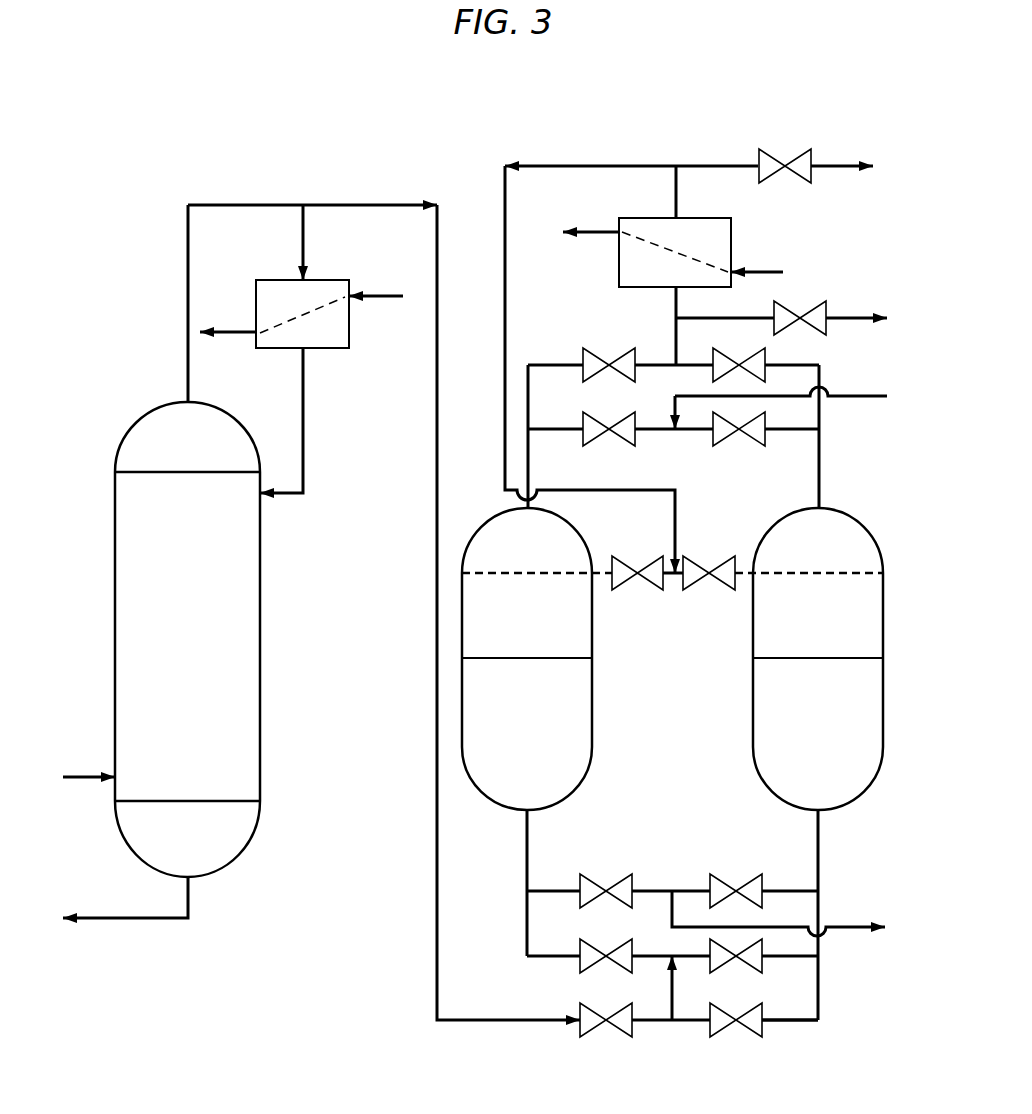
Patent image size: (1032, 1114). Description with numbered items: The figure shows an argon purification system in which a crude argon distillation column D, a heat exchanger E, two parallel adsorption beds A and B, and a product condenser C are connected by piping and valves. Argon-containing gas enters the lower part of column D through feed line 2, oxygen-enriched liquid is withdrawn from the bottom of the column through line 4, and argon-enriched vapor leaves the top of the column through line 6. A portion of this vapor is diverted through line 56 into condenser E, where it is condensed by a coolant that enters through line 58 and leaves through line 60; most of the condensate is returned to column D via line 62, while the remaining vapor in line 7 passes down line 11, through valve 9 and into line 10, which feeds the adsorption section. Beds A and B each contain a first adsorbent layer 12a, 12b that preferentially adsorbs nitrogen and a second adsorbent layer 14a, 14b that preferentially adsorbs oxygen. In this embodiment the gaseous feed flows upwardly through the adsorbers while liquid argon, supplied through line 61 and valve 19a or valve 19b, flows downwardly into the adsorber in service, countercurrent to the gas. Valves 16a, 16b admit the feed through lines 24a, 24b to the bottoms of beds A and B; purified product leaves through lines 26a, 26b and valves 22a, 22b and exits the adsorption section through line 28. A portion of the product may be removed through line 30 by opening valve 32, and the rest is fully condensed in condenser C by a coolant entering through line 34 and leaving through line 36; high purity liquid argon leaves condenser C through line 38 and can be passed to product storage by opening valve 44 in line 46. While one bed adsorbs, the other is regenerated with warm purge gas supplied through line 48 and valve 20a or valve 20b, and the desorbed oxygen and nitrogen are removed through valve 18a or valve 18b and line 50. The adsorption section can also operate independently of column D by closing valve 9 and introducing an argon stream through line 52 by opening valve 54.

The feed line 2 is at (80, 776).
The line 4 is at (112, 918).
The line 6 is at (188, 312).
The line 7 is at (322, 205).
The valve 9 is at (580, 1030).
The line 10 is at (672, 1000).
The line 11 is at (437, 270).
The first layer of adsorbent 12a is at (527, 700).
The first layer of adsorbent 12b is at (818, 701).
The second layer of adsorbent 14a is at (537, 615).
The second layer of adsorbent 14b is at (809, 615).
The valve 16a is at (580, 963).
The valve 16b is at (765, 963).
The valve 18a is at (582, 882).
The valve 18b is at (712, 882).
The valve 19a is at (622, 556).
The valve 19b is at (720, 556).
The valve 20a is at (585, 420).
The valve 20b is at (713, 440).
The valve 22a is at (587, 355).
The valve 22b is at (768, 360).
The line 24a is at (527, 940).
The line 24b is at (820, 945).
The line 26a is at (528, 418).
The line 26b is at (819, 425).
The line 28 is at (676, 335).
The line 30 is at (855, 325).
The valve 32 is at (827, 312).
The line 34 is at (768, 272).
The line 36 is at (593, 228).
The line 38 is at (676, 190).
The valve 44 is at (758, 157).
The line 46 is at (835, 165).
The line 48 is at (887, 396).
The line 50 is at (845, 925).
The line 52 is at (818, 1025).
The valve 54 is at (765, 1030).
The line 56 is at (303, 245).
The line 58 is at (377, 296).
The line 60 is at (235, 332).
The line 61 is at (505, 322).
The line 62 is at (303, 425).
The adsorption bed A is at (592, 642).
The adsorption bed B is at (753, 722).
The condenser C is at (731, 230).
The crude argon distillation column D is at (187, 639).
The heat exchanger E is at (349, 330).